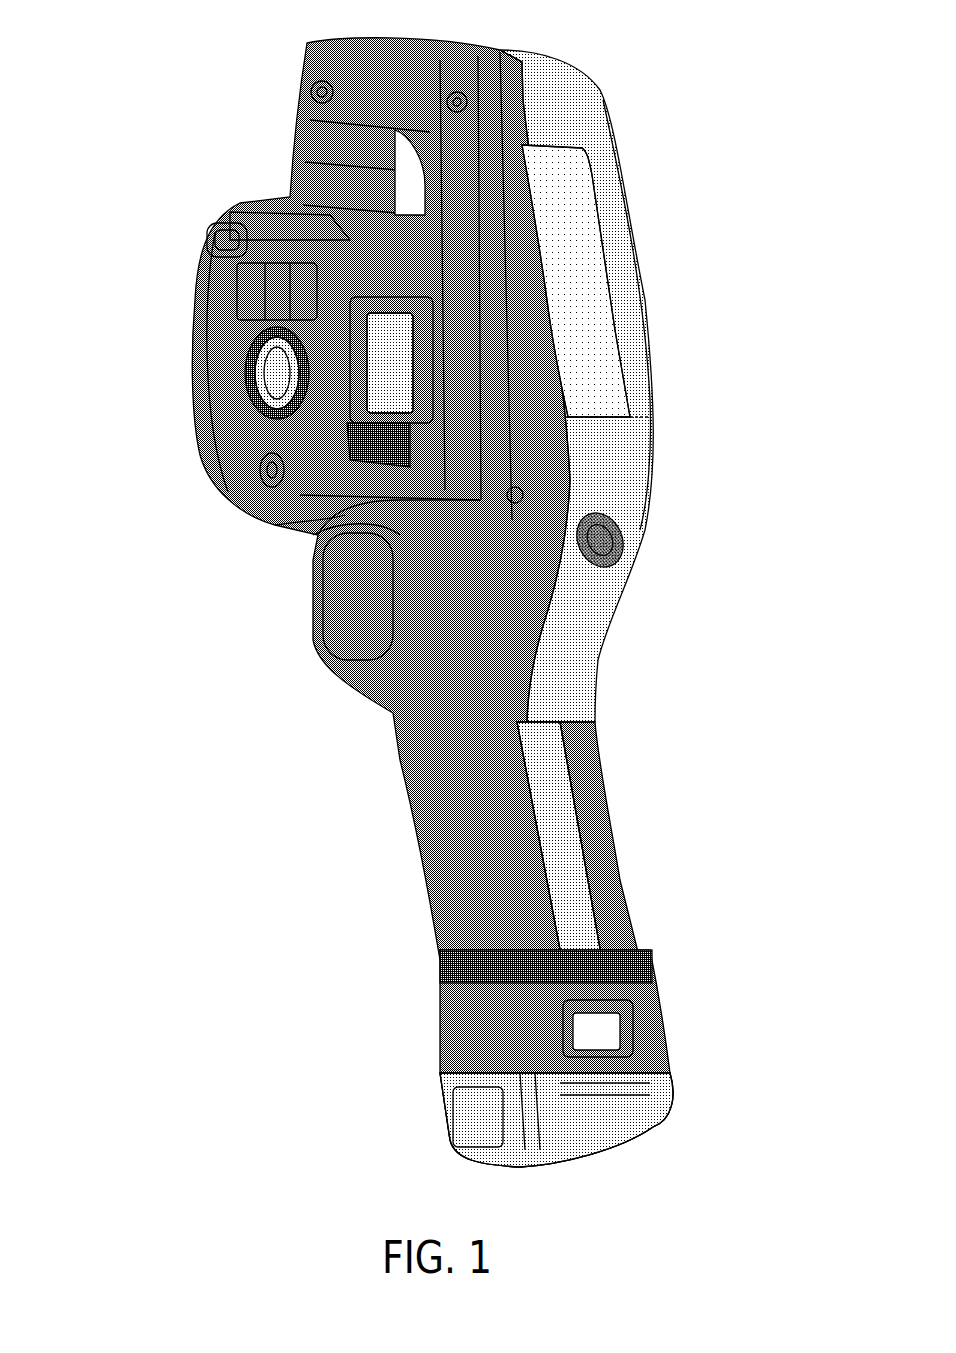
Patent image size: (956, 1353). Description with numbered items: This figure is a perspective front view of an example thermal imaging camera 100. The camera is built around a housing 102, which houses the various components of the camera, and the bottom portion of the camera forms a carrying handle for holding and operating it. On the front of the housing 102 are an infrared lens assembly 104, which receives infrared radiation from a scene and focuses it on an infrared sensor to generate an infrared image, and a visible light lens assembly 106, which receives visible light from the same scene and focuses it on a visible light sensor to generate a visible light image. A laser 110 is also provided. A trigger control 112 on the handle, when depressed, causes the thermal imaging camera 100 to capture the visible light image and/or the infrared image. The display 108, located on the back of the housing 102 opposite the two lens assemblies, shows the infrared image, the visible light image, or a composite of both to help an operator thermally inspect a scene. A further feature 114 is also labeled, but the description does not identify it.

The thermal imaging camera 100 is at (262, 125).
The housing 102 is at (553, 95).
The infrared lens assembly 104 is at (290, 395).
The visible light lens assembly 106 is at (212, 277).
The display 108 is at (641, 230).
The laser 110 is at (238, 478).
The trigger control 112 is at (335, 620).
The lens housing seam 114 is at (330, 501).